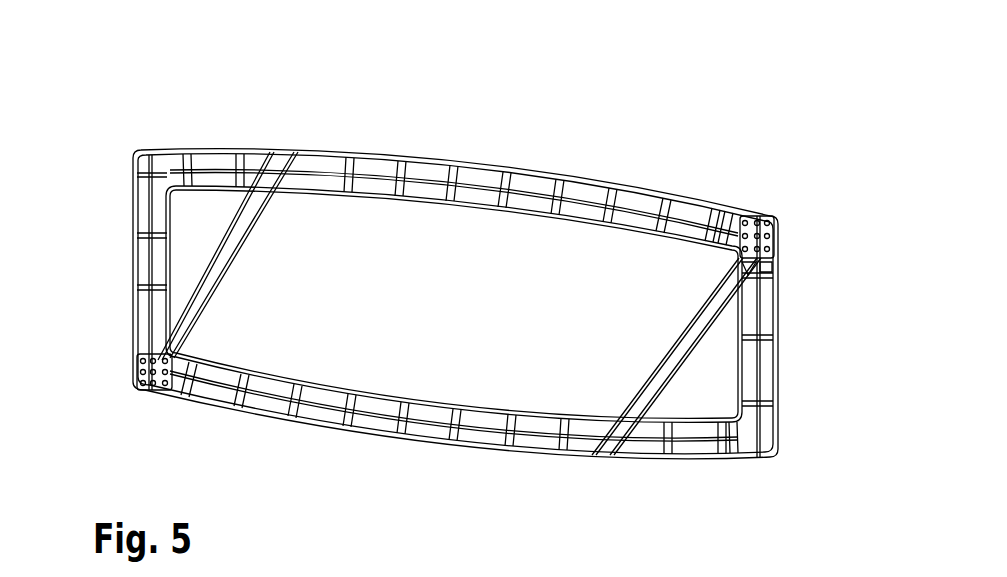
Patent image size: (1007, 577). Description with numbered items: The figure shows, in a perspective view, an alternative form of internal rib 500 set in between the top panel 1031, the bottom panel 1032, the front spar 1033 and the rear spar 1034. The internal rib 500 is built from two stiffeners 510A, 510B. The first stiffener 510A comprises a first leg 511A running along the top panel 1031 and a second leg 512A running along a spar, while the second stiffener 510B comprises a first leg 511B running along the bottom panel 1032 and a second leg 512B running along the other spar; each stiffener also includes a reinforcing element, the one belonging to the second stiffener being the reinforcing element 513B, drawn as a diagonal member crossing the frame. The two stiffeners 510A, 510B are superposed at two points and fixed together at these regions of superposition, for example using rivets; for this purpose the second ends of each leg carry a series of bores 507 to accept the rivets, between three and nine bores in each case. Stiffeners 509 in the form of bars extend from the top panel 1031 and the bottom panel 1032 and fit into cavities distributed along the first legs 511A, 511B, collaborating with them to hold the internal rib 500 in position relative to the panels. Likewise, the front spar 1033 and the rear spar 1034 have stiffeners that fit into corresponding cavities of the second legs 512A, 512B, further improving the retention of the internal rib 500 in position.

The internal rib 500 is at (168, 130).
The stiffeners 509 is at (345, 153).
The top panel 1031 is at (373, 155).
The first stiffener 510A is at (468, 148).
The first leg 511A is at (585, 192).
The bores 507 is at (757, 217).
The second leg 512A is at (142, 215).
The front spar 1033 is at (130, 269).
The reinforcing element 513B is at (226, 262).
The second leg 512B is at (765, 318).
The rear spar 1034 is at (780, 365).
The bottom panel 1032 is at (277, 425).
The second stiffener 510B is at (388, 458).
The first leg 511B is at (527, 440).